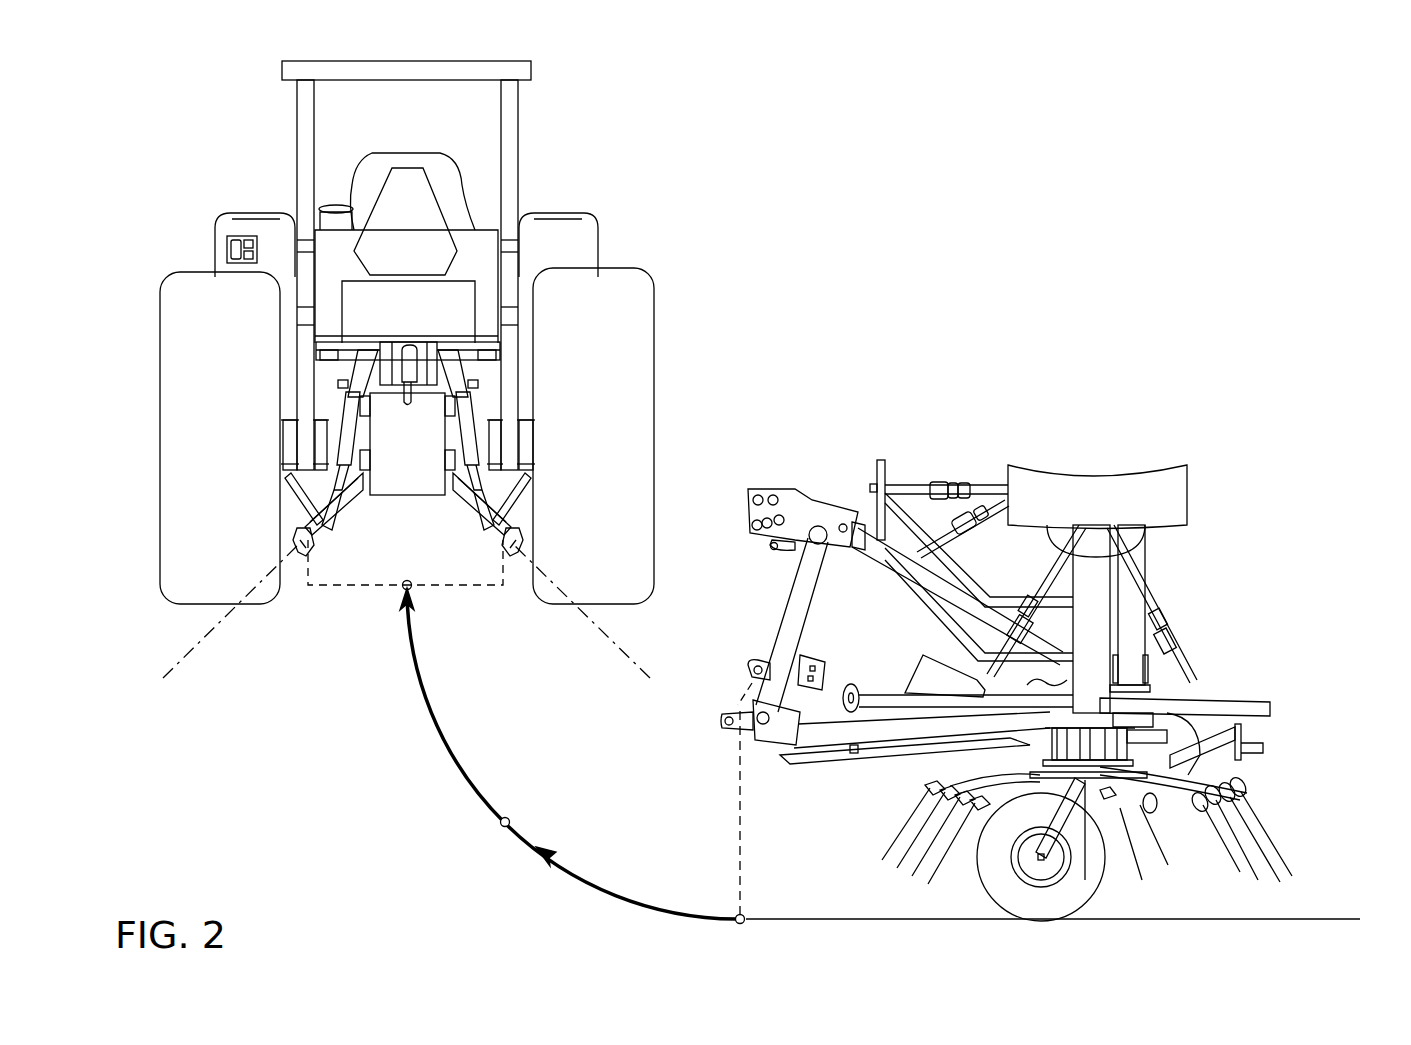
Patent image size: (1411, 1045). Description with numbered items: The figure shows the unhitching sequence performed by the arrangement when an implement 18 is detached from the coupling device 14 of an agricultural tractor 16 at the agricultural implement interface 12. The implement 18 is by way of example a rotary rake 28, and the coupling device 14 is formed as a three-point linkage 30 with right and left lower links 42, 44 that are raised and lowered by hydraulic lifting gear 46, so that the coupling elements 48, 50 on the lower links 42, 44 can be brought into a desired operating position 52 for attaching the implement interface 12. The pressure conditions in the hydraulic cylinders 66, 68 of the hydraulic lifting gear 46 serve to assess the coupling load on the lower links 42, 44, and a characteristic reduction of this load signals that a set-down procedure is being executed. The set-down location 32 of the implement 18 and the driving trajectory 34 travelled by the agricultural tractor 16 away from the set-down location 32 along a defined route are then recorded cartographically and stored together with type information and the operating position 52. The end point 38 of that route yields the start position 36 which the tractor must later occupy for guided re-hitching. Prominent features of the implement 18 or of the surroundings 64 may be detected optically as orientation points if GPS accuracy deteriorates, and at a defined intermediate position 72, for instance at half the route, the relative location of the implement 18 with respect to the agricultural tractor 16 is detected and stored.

The agricultural implement interface 12 is at (807, 448).
The coupling device 14 is at (572, 331).
The agricultural tractor 16 is at (615, 82).
The implement 18 is at (1258, 531).
The rotary rake 28 is at (1140, 550).
The three-point linkage 30 is at (431, 331).
The set-down location 32 is at (403, 592).
The driving trajectory 34 is at (550, 877).
The start position 36 is at (735, 909).
The end point 38 is at (747, 913).
The right lower link 42 is at (482, 555).
The left lower link 44 is at (330, 555).
The hydraulic lifting gear 46 is at (326, 386).
The coupling element 48 is at (522, 568).
The coupling element 50 is at (295, 568).
The operating position 52 is at (177, 672).
The surroundings 64 is at (712, 668).
The hydraulic cylinder 66 is at (455, 420).
The hydraulic cylinder 68 is at (360, 425).
The intermediate position 72 is at (502, 830).